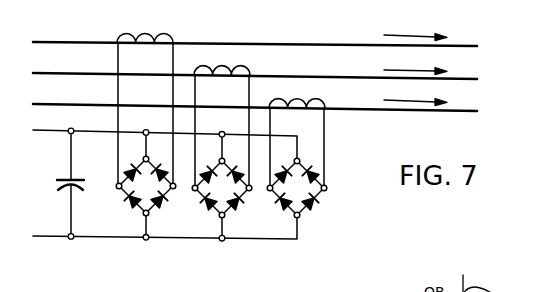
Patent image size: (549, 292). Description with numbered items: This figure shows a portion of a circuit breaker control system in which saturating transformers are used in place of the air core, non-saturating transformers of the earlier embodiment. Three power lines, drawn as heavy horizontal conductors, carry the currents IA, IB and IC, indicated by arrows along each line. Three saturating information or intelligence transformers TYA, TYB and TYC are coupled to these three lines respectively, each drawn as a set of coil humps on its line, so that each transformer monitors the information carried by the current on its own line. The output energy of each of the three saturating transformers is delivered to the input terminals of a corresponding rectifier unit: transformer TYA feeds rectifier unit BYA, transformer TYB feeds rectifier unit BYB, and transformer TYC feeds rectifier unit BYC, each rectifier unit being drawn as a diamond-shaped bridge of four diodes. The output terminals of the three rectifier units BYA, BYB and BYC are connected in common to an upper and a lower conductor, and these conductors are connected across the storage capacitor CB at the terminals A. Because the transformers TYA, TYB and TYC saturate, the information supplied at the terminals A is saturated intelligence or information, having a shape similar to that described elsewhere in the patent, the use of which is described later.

The current IA is at (402, 34).
The current IB is at (402, 69).
The current IC is at (402, 100).
The saturating information transformer TYA is at (169, 30).
The saturating information transformer TYB is at (242, 66).
The saturating information transformer TYC is at (295, 97).
The terminals AA A is at (165, 182).
The storage capacitor CB is at (58, 182).
The rectifier unit BYA is at (136, 205).
The rectifier unit BYB is at (213, 206).
The rectifier unit BYC is at (288, 206).